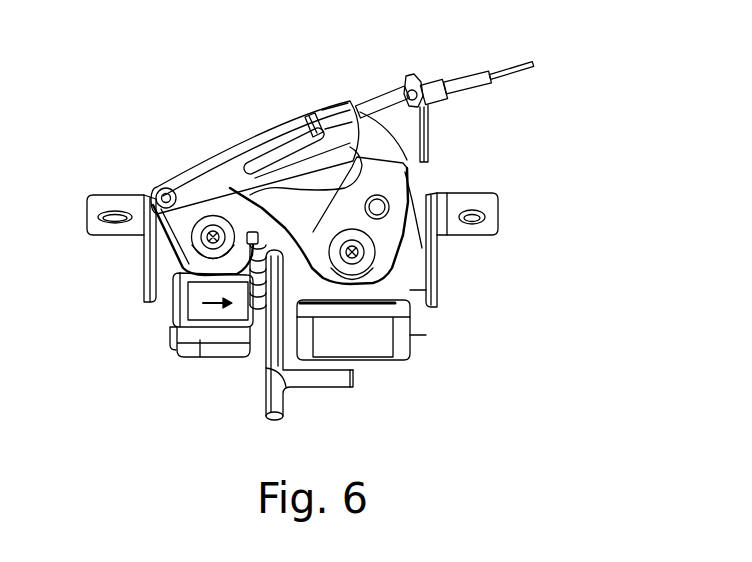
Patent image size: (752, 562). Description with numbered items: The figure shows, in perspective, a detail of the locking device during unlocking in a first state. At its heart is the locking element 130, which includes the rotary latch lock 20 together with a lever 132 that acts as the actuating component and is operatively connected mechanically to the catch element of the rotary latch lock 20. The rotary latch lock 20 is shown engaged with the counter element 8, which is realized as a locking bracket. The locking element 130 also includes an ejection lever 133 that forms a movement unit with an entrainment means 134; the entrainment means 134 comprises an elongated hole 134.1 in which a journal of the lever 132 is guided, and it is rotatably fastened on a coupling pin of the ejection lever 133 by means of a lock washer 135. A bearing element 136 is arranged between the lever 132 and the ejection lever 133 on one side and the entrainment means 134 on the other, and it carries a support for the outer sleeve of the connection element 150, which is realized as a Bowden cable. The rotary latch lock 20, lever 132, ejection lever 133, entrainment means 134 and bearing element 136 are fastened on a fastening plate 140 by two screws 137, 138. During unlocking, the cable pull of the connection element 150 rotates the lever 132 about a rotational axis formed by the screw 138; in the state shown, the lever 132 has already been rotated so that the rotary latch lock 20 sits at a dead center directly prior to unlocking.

The counter element 8 is at (265, 396).
The rotary latch lock 20 is at (175, 317).
The locking element 130 is at (295, 87).
The lever 132 is at (390, 188).
The ejection lever 133 is at (183, 229).
The entrainment means 134 is at (202, 187).
The elongated hole 134.1 is at (258, 163).
The lock washer 135 is at (162, 184).
The bearing element 136 is at (428, 128).
The screw 137 is at (195, 248).
The screw 138 is at (395, 268).
The fastening plate 140 is at (498, 222).
The connection element 150 is at (383, 100).